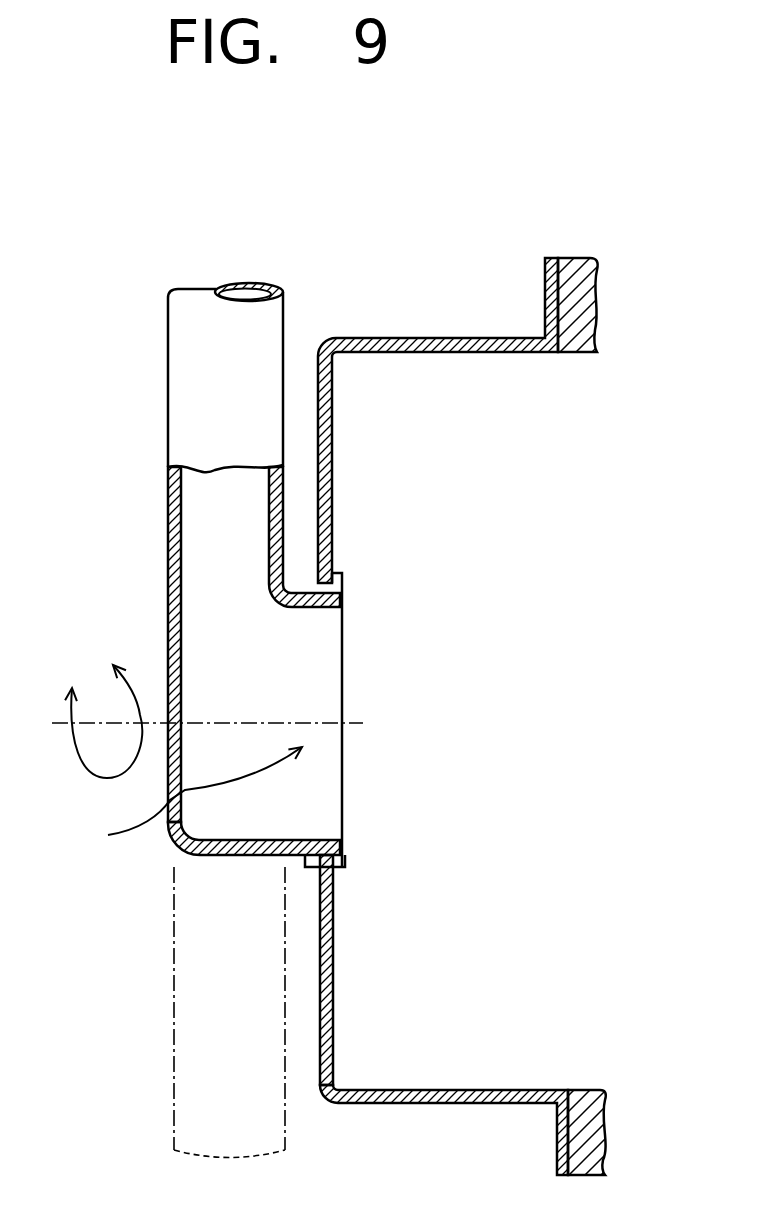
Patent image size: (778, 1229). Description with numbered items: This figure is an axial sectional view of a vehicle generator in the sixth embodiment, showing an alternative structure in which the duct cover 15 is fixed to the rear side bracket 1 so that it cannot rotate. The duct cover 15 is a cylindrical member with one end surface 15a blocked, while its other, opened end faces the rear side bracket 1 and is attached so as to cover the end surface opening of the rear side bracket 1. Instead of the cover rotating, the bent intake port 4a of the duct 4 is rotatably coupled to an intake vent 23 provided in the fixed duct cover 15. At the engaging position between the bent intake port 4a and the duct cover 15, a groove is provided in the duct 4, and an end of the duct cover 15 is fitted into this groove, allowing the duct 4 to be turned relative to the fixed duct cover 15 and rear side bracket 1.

The rear side bracket 1 is at (583, 293).
The duct 4 is at (178, 425).
The bent intake port 4a is at (250, 857).
The duct cover 15 is at (463, 1103).
The end surface 15a is at (320, 1045).
The intake vent 23 is at (180, 803).